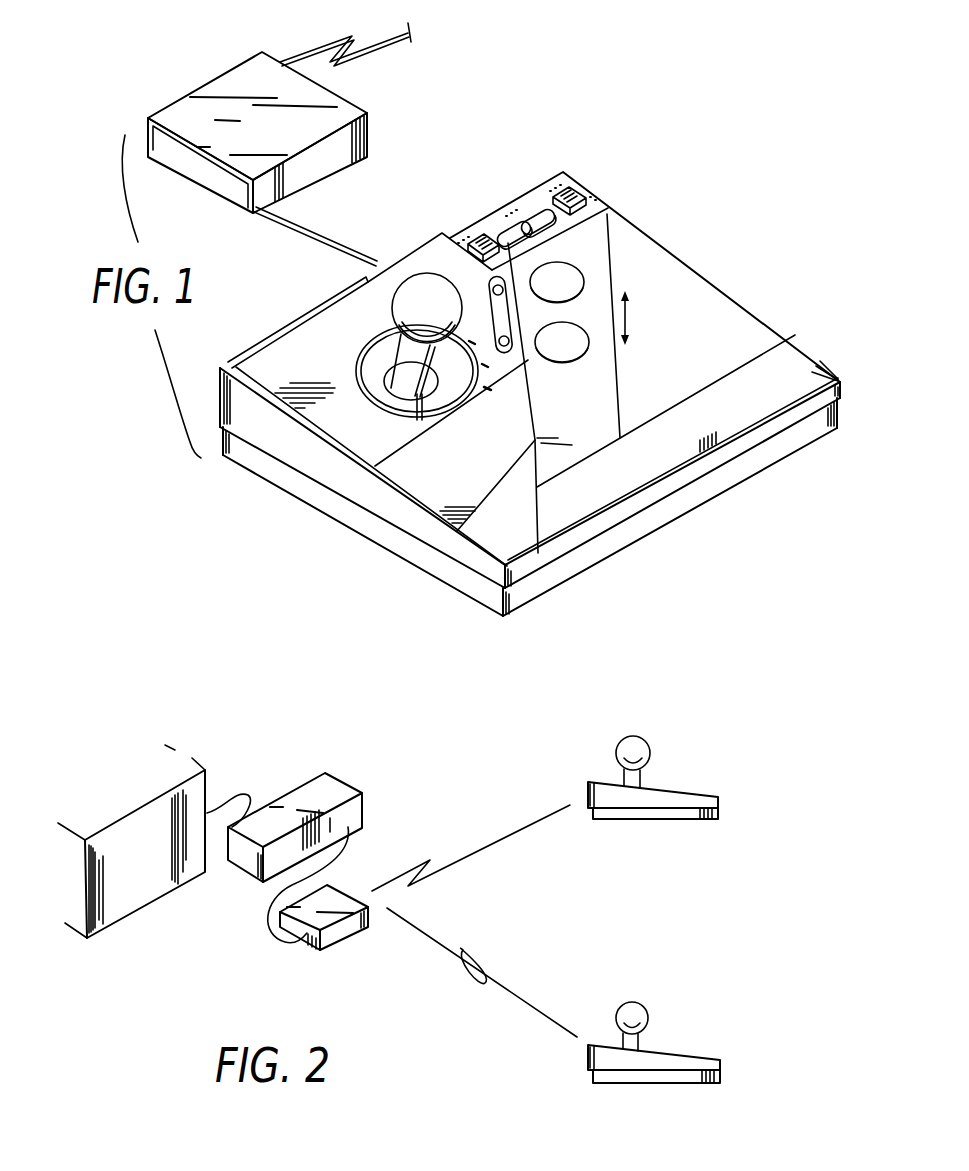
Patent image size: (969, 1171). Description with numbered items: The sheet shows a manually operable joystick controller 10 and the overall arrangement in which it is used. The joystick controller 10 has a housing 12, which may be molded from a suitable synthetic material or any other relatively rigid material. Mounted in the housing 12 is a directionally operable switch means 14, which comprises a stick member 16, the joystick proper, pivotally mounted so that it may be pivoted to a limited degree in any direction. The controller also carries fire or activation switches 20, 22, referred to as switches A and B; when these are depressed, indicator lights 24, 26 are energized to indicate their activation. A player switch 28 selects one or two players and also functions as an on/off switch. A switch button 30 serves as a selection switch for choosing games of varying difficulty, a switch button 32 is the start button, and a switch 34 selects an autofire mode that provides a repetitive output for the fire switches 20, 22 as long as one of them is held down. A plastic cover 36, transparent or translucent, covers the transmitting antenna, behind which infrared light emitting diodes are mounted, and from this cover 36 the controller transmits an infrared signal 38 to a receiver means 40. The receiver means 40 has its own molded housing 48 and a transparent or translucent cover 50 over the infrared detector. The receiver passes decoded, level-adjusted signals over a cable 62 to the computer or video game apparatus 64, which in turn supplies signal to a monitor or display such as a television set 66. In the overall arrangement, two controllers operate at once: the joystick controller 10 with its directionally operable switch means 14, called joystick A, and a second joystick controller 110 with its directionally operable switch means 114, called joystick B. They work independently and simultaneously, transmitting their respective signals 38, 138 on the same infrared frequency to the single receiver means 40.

In FIG. 1, the joystick controller 10 is at (530, 374).
In FIG. 2, the joystick controller 10 is at (684, 761).
In FIG. 1, the housing 12 is at (700, 507).
In FIG. 1, the directionally operable switch means 14 is at (402, 297).
In FIG. 2, the directionally operable switch means 14 is at (645, 742).
In FIG. 1, the stick member 16 is at (412, 365).
In FIG. 1, the fire or activation switch 20 is at (573, 267).
In FIG. 1, the fire or activation switch 22 is at (568, 346).
In FIG. 1, the indicator light 24 is at (497, 289).
In FIG. 1, the indicator light 26 is at (507, 340).
In FIG. 1, the player switch 28 is at (565, 188).
In FIG. 1, the switch button 30 is at (532, 212).
In FIG. 1, the switch button 32 is at (506, 222).
In FIG. 1, the switch 34 is at (468, 234).
In FIG. 1, the plastic cover 36 is at (396, 252).
In FIG. 1, the signal 38 is at (313, 242).
In FIG. 2, the signal 38 is at (522, 827).
In FIG. 1, the receiver means 40 is at (282, 138).
In FIG. 2, the receiver means 40 is at (353, 935).
In FIG. 1, the housing 48 is at (347, 113).
In FIG. 1, the cover 50 is at (208, 174).
In FIG. 1, the cable 62 is at (350, 35).
In FIG. 2, the cable 62 is at (267, 928).
In FIG. 2, the computer or video game apparatus 64 is at (337, 773).
In FIG. 2, the television set 66 is at (192, 758).
In FIG. 2, the joystick controller 110 is at (683, 1035).
In FIG. 2, the directionally operable switch means 114 is at (638, 1002).
In FIG. 2, the signal 138 is at (507, 972).